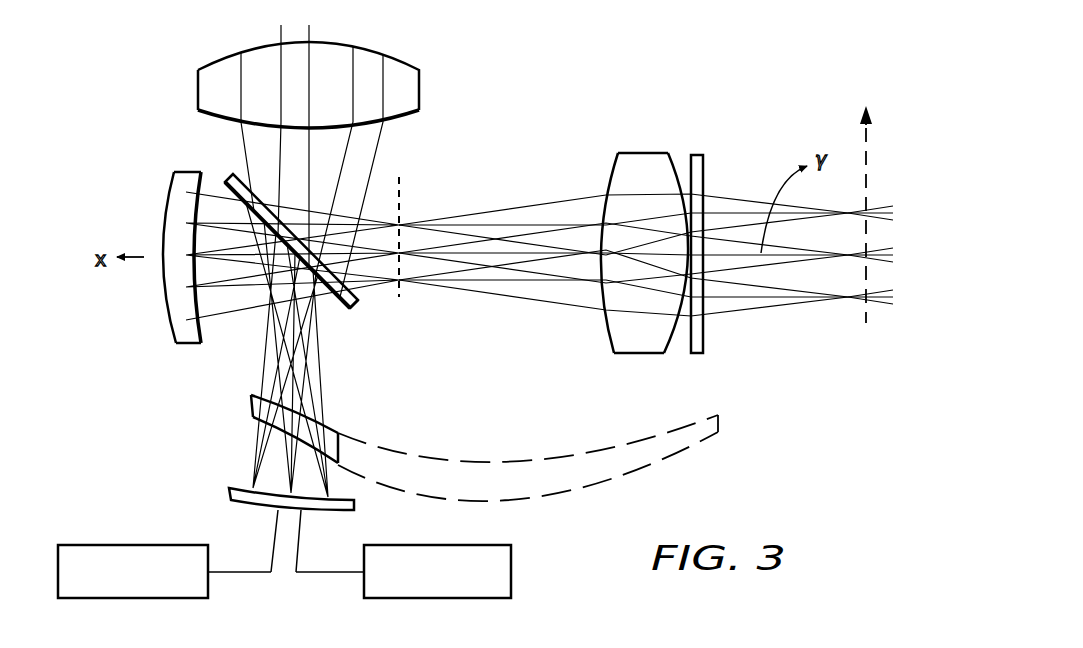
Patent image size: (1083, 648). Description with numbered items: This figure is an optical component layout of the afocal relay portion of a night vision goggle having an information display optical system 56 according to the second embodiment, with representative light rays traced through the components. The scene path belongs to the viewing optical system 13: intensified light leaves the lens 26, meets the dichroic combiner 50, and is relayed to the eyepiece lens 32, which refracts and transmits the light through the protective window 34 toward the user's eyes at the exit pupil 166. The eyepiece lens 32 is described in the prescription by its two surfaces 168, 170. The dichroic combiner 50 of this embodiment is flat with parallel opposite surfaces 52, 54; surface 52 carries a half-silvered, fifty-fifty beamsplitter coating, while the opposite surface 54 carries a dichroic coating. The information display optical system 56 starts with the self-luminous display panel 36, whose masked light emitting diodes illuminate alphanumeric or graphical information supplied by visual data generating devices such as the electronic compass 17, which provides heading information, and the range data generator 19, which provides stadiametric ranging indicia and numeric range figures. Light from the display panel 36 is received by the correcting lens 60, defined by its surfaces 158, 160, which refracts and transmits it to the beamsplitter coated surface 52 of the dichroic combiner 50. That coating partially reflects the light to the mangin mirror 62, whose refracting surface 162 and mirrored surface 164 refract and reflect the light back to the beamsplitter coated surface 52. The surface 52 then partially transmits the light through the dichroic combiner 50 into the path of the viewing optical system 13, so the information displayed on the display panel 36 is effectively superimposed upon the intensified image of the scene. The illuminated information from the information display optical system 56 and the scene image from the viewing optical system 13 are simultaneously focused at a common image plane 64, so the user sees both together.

The viewing optical system 13 is at (712, 90).
The electronic compass 17 is at (512, 572).
The range data generator 19 is at (102, 545).
The lens 26 is at (418, 82).
The eyepiece lens 32 is at (639, 264).
The protective window 34 is at (694, 356).
The self-luminous display panel 36 is at (355, 503).
The dichroic combiner 50 is at (223, 184).
The beamsplitter coated surface 52 is at (219, 190).
The dichroic coated surface 54 is at (354, 303).
The information display optical system 56 is at (176, 426).
The correcting lens 60 is at (458, 439).
The mangin mirror 62 is at (186, 283).
The common image plane 64 is at (402, 190).
The correcting lens surface 158 is at (273, 428).
The correcting lens surface 160 is at (316, 414).
The mangin mirror refracting surface 162 is at (196, 309).
The mangin mirror reflecting surface 164 is at (168, 202).
The exit pupil 166 is at (868, 182).
The eyepiece lens surface 168 is at (673, 167).
The eyepiece lens surface 170 is at (607, 178).